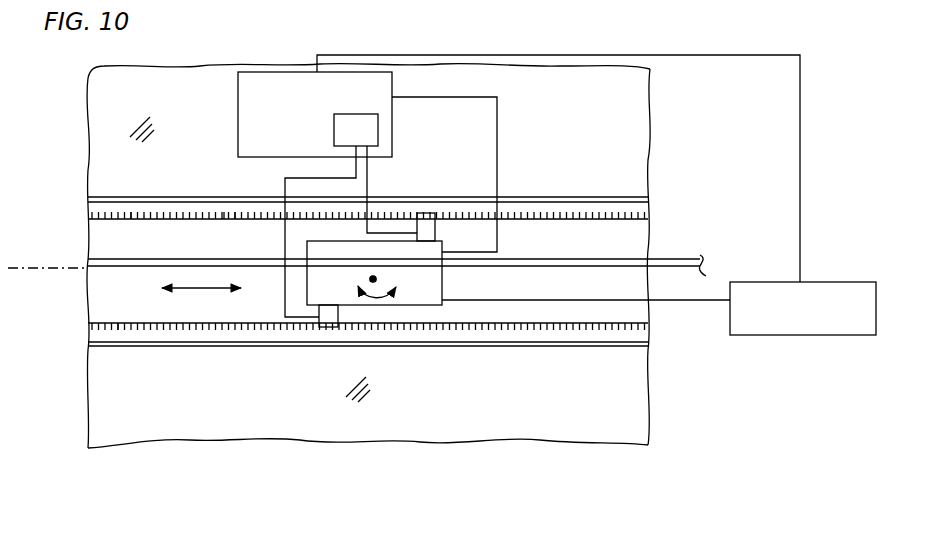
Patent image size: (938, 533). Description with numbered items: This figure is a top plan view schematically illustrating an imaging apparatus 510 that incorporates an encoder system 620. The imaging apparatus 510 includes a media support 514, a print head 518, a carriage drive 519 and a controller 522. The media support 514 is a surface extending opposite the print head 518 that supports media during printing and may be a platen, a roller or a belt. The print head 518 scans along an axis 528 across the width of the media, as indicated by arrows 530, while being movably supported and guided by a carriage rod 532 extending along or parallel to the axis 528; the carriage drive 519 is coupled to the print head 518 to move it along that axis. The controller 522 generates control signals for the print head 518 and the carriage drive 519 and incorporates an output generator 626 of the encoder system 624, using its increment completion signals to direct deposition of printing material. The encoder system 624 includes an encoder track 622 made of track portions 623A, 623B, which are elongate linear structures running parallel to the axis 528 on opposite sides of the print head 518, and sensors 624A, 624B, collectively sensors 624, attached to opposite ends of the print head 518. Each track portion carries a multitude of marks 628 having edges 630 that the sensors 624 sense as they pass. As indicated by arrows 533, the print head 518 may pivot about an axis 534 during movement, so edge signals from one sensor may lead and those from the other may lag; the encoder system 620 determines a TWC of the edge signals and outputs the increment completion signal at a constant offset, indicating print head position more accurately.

The imaging apparatus 510 is at (549, 150).
The media support 514 is at (613, 402).
The print head 518 is at (444, 299).
The carriage drive 519 is at (825, 282).
The controller 522 is at (238, 133).
The axis 528 is at (12, 268).
The arrows 530 is at (203, 289).
The carriage rod 532 is at (681, 262).
The arrows 533 is at (400, 291).
The axis 534 is at (332, 331).
The encoder system 620 is at (370, 280).
The encoder track 622 is at (87, 195).
The track portion 623A is at (117, 322).
The track portion 623B is at (135, 221).
The encoder system 624 is at (136, 344).
The sensor 624A is at (340, 316).
The sensor 624B is at (436, 235).
The output generator 626 is at (378, 138).
The marks 628 is at (234, 220).
The edges 630 is at (226, 211).